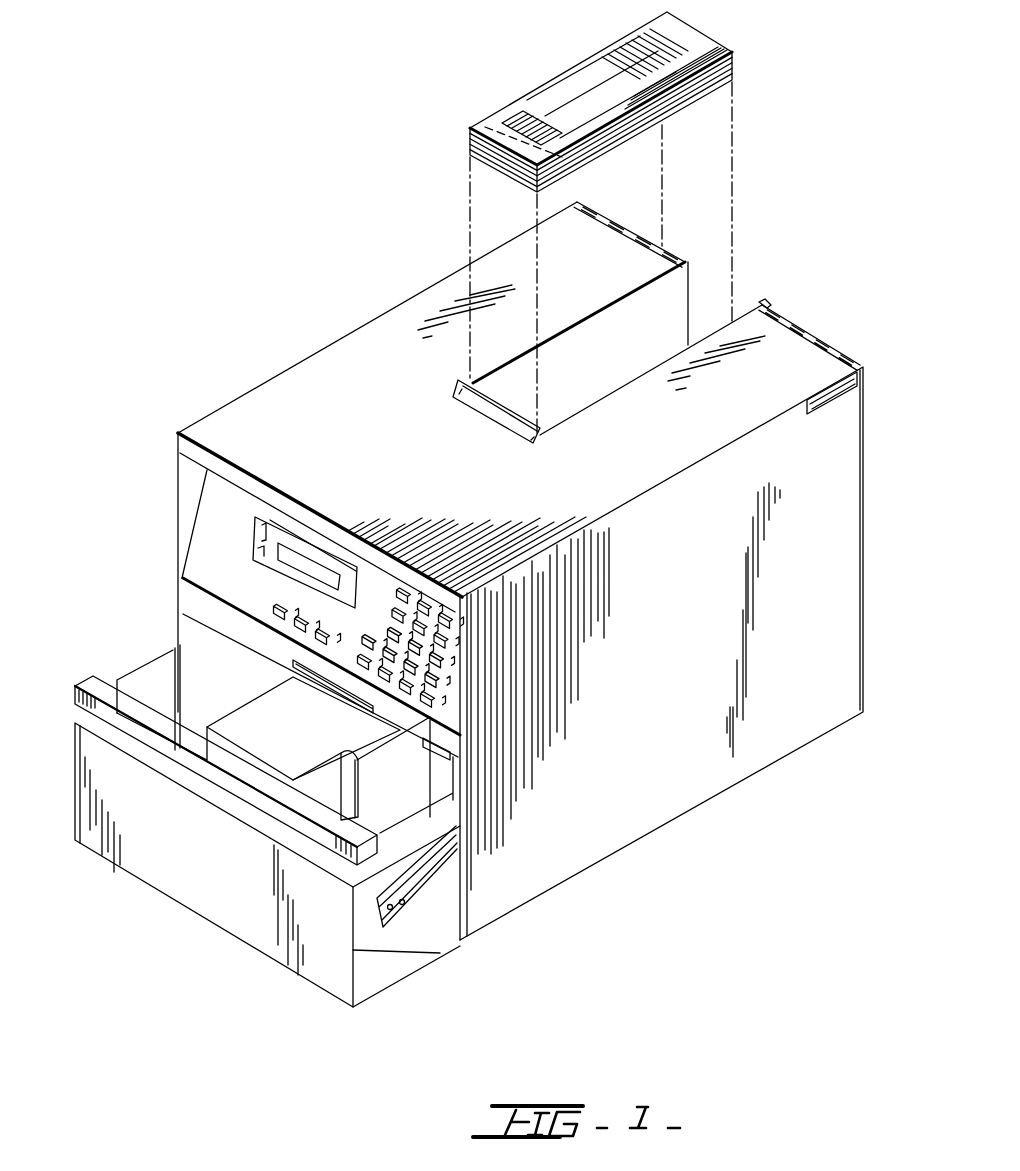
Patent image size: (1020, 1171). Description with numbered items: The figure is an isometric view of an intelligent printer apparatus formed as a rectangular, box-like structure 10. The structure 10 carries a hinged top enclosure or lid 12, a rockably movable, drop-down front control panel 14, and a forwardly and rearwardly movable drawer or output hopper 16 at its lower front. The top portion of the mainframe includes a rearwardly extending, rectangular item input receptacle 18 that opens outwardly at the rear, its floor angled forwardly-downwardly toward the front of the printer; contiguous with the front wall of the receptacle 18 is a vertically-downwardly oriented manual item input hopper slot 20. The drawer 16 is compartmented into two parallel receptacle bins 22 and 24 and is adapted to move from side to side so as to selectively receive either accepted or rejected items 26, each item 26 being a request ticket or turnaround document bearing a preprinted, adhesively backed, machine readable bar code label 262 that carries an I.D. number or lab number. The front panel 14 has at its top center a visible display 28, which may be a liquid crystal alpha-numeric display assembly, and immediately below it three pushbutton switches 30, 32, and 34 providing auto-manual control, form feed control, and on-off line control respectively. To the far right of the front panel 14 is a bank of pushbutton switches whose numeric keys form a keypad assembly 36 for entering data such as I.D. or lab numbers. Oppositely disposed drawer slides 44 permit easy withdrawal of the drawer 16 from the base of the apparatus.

The box-like structure 10 is at (332, 330).
The top enclosure or lid 12 is at (255, 412).
The front control panel 14 is at (216, 528).
The drawer or output hopper 16 is at (226, 873).
The item input receptacle 18 is at (606, 365).
The manual item input hopper slot 20 is at (497, 410).
The receptacle bin 22 is at (228, 691).
The receptacle bin 24 is at (410, 795).
The item 26 is at (466, 141).
The bar code label 262 is at (522, 118).
The visible display 28 is at (322, 570).
The pushbutton switch 30 is at (268, 605).
The pushbutton switch 32 is at (298, 615).
The pushbutton switch 34 is at (336, 644).
The keypad assembly 36 is at (446, 686).
The drawer slide 44 is at (425, 905).